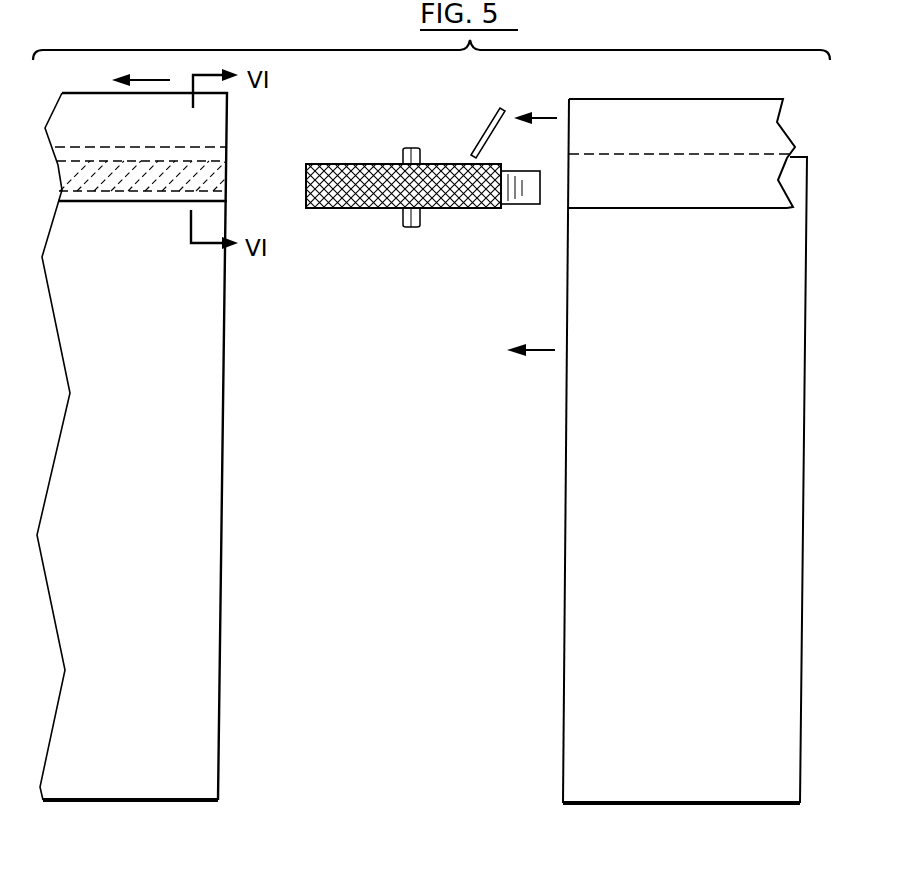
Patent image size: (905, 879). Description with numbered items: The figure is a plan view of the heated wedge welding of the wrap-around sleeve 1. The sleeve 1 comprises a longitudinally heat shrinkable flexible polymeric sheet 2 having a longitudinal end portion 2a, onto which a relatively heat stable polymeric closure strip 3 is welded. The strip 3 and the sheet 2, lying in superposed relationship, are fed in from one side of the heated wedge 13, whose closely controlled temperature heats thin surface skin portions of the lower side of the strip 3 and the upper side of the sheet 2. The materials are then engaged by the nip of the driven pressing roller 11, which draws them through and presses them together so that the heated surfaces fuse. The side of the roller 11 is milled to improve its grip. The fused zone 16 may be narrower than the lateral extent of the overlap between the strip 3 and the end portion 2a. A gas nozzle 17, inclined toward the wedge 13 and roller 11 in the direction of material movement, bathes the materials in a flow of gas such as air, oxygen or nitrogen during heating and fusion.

The wrap-around sleeve 1 is at (228, 487).
The longitudinally heat shrinkable flexible polymeric sheet 2 is at (218, 783).
The longitudinal end portion 2a is at (800, 185).
The closure strip 3 is at (216, 138).
The nip roller 11 is at (358, 164).
The heated wedge 13 is at (522, 205).
The zone 16 is at (228, 178).
The gas nozzle 17 is at (486, 133).